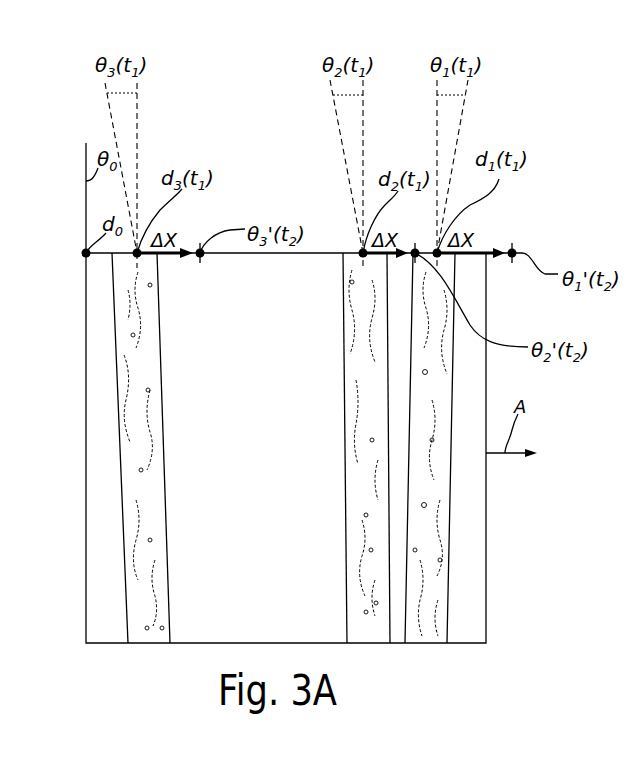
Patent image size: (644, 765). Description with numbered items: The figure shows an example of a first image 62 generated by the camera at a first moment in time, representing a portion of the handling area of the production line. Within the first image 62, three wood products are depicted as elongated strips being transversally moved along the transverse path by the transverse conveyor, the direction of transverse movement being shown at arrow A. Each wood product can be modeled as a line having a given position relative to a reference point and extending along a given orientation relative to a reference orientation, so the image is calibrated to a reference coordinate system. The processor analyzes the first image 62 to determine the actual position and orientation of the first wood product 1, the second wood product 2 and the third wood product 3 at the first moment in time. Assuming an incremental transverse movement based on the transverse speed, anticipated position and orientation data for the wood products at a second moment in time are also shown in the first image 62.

The first image 62 is at (486, 253).
The first wood product 1 is at (430, 448).
The second wood product 2 is at (366, 448).
The third wood product 3 is at (141, 448).